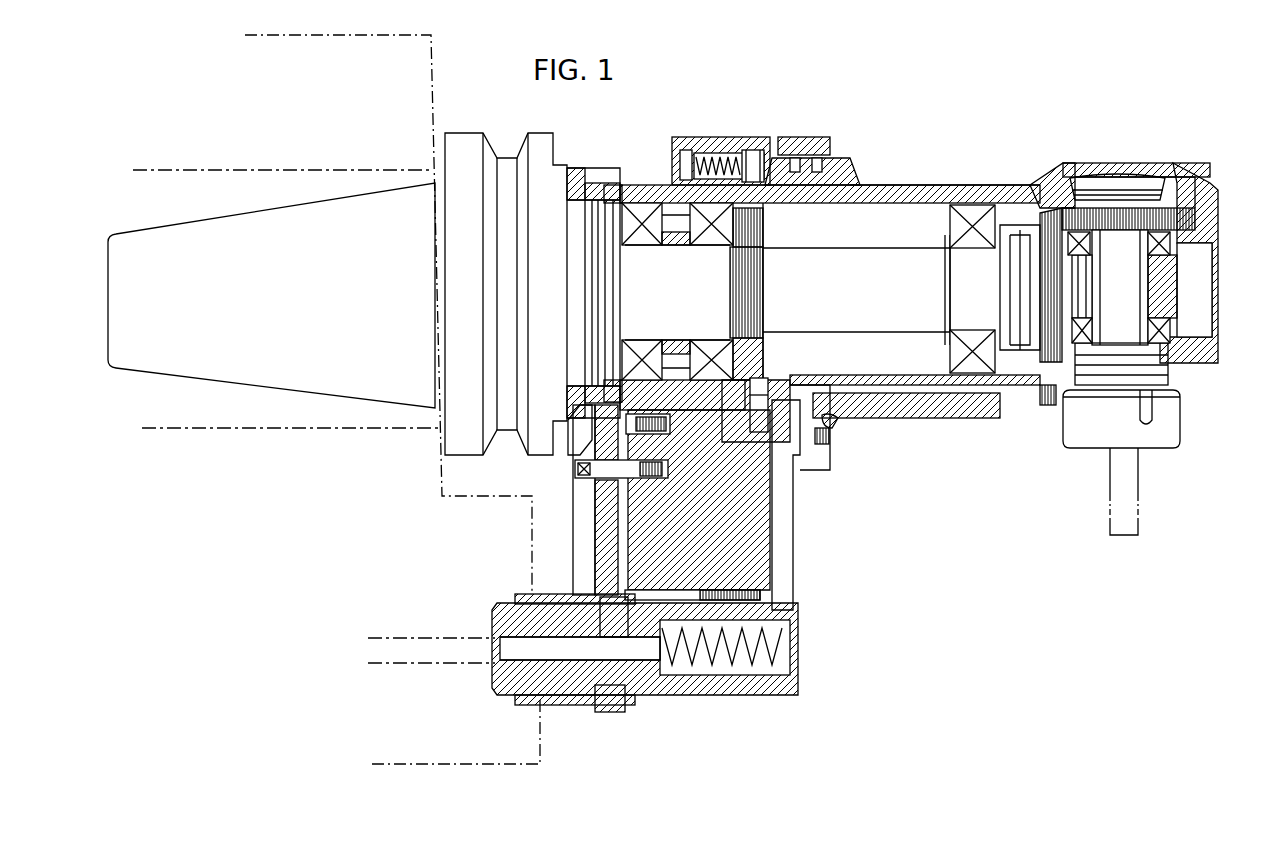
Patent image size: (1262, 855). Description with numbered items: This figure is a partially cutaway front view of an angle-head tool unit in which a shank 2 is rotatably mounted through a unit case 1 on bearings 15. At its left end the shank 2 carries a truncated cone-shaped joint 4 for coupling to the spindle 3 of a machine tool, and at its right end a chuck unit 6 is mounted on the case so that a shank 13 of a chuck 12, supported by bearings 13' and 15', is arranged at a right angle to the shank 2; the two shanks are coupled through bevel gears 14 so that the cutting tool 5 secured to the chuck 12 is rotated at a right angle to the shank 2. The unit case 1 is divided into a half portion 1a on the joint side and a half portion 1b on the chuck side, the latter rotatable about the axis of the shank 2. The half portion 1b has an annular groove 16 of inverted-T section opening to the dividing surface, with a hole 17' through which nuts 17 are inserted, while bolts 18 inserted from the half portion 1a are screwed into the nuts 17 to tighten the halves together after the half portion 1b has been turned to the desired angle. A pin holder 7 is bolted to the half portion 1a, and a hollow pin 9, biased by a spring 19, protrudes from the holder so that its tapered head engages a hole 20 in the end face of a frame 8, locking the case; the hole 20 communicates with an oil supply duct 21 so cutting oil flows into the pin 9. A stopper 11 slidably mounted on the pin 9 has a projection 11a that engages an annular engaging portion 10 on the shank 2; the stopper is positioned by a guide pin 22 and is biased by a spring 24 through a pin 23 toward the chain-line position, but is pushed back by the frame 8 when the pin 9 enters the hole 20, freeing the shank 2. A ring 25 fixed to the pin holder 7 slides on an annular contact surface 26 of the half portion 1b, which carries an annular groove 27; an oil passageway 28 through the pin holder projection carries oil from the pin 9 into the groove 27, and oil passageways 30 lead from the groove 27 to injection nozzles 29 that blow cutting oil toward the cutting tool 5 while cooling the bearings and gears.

The unit case 1 is at (752, 172).
The half portion of the unit case 1a is at (626, 195).
The half portion of the unit case 1b is at (850, 185).
The shank 2 is at (890, 265).
The spindle 3 is at (166, 178).
The joint 4 is at (238, 372).
The cutting tool 5 is at (1130, 522).
The chuck unit 6 is at (1221, 292).
The pin holder 7 is at (760, 538).
The frame 8 is at (530, 738).
The hollow pin 9 is at (640, 662).
The annular engaging portion 10 is at (572, 448).
The stopper 11 is at (583, 560).
The projection 11a is at (606, 520).
The chuck 12 is at (1082, 422).
The shank of the chuck 13 is at (1165, 307).
The bearings 13' is at (1164, 291).
The bevel gears 14 is at (1110, 215).
The bearings 15 is at (677, 245).
The bearings 15' is at (944, 289).
The annular groove 16 is at (752, 160).
The nuts 17 is at (812, 142).
The hole 17' is at (772, 364).
The bolts 18 is at (689, 160).
The spring 19 is at (786, 642).
The hole 20 is at (556, 705).
The oil supply duct 21 is at (424, 655).
The guide pin 22 is at (590, 478).
The pin 23 is at (666, 600).
The spring 24 is at (762, 597).
The ring 25 is at (820, 148).
The annular contact surface 26 is at (836, 430).
The annular groove 27 is at (840, 416).
The oil passageway 28 is at (776, 500).
The injection nozzles 29 is at (1024, 400).
The oil passageways 30 is at (960, 408).